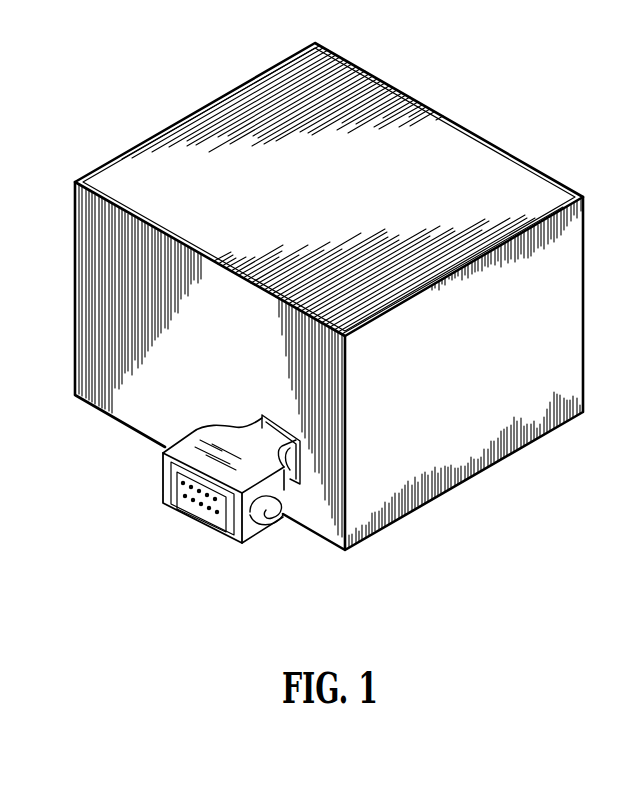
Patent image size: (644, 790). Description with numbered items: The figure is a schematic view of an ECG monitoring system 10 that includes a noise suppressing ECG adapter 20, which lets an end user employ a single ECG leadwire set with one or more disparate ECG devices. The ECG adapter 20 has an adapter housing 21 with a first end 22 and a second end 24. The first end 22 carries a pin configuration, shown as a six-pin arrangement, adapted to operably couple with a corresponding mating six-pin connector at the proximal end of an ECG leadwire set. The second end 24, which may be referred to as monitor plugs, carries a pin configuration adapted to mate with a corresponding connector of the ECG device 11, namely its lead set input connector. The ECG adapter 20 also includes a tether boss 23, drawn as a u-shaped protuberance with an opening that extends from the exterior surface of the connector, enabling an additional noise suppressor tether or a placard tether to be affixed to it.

The ECG monitoring system 10 is at (591, 91).
The ECG device 11 is at (131, 160).
The noise suppressing ECG adapter 20 is at (185, 448).
The adapter housing 21 is at (272, 463).
The first end 22 is at (168, 503).
The tether boss 23 is at (355, 530).
The second end 24 is at (290, 444).